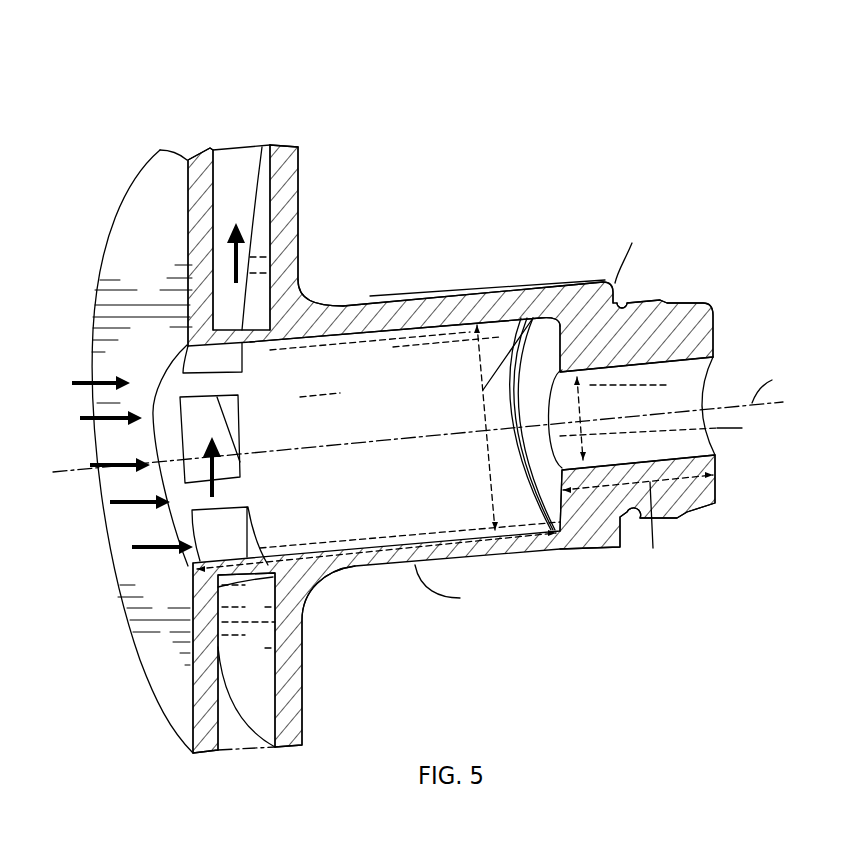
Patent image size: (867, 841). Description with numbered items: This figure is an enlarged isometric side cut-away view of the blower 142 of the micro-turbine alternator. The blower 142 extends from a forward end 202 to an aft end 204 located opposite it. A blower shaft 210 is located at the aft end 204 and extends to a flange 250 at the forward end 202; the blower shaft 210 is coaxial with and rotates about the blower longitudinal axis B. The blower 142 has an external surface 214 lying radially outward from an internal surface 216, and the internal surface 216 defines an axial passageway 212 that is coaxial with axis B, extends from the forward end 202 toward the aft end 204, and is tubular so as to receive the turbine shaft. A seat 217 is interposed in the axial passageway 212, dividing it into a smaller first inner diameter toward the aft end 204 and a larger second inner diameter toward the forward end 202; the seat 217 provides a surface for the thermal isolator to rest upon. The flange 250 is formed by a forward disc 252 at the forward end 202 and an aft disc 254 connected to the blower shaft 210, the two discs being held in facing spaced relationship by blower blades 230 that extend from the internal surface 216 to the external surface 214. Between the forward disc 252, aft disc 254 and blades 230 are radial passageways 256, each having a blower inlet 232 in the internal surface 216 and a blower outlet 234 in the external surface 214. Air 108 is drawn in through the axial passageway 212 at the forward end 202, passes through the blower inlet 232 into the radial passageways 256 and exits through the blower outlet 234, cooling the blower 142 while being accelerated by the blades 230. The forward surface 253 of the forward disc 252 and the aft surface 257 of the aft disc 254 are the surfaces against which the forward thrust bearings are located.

The blower 142 is at (141, 46).
The air 108 is at (150, 550).
The forward end 202 is at (90, 405).
The aft end 204 is at (712, 338).
The blower shaft 210 is at (487, 300).
The axial passageway 212 is at (358, 518).
The external surface 214 is at (365, 305).
The internal surface 216 is at (393, 333).
The seat 217 is at (557, 510).
The blower blades 230 is at (233, 182).
The blower inlet 232 is at (253, 530).
The blower outlet 234 is at (248, 752).
The flange 250 is at (273, 143).
The forward disc 252 is at (197, 197).
The forward surface 253 is at (133, 230).
The aft disc 254 is at (298, 172).
The radial passageway 256 is at (277, 223).
The aft surface 257 is at (298, 253).